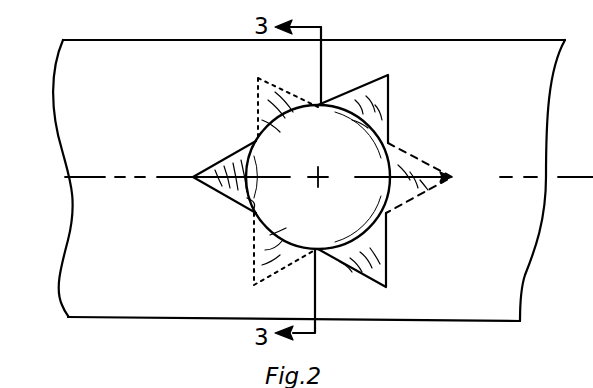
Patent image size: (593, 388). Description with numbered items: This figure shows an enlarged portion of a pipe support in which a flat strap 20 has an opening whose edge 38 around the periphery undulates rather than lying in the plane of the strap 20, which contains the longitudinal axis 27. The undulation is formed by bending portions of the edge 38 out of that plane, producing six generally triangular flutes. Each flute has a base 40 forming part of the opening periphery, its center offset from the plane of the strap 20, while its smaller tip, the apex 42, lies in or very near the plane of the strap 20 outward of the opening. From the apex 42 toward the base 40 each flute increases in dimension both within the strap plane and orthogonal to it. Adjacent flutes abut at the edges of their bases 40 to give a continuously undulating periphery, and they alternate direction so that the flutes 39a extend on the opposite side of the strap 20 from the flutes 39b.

The strap 20 is at (472, 66).
The longitudinal axis 27 is at (92, 176).
The edge 38 is at (252, 210).
The flutes 39a is at (222, 160).
The flutes 39b is at (258, 92).
The base 40 is at (388, 145).
The apex 42 is at (388, 75).